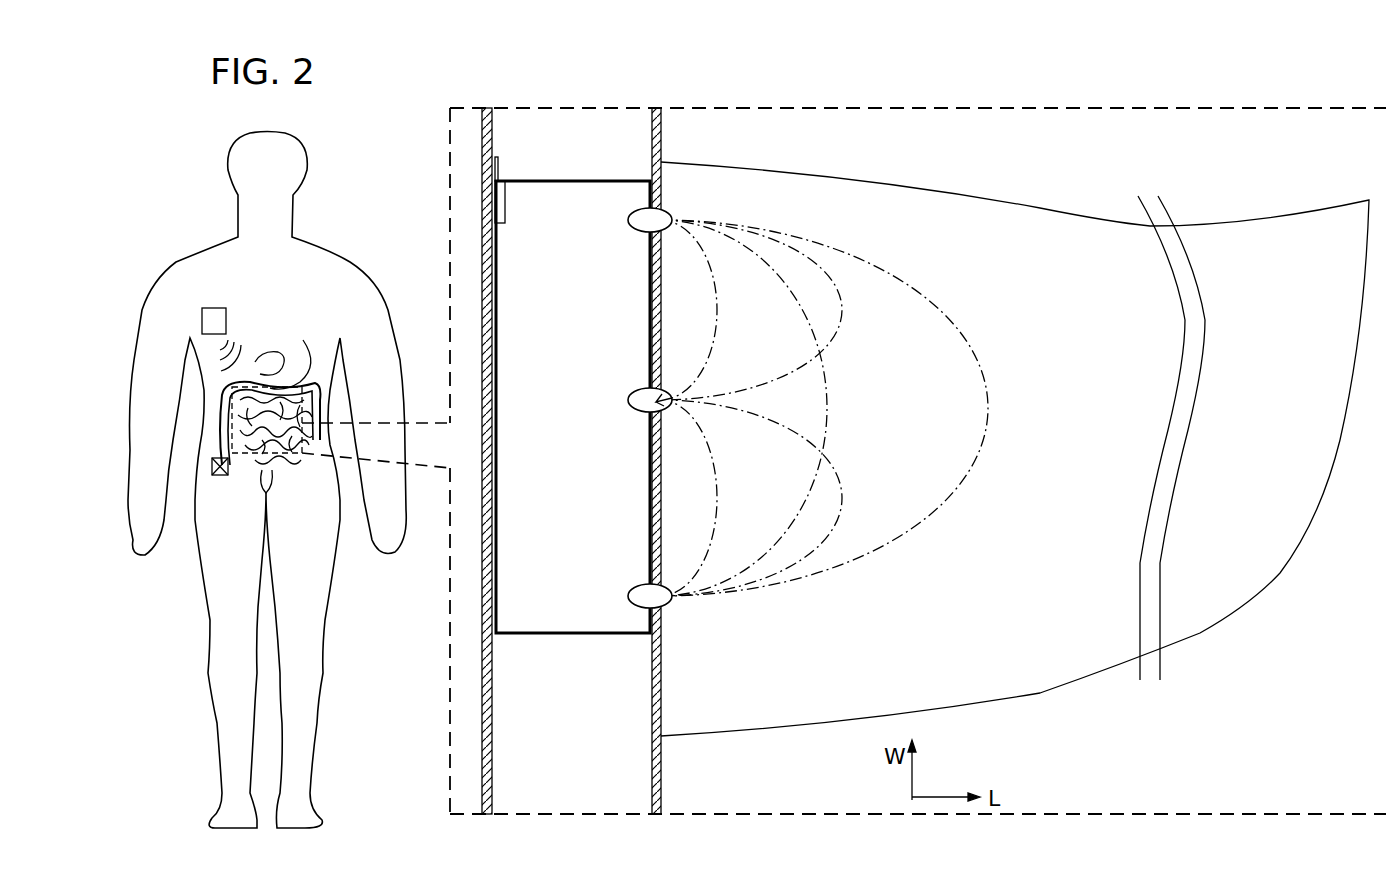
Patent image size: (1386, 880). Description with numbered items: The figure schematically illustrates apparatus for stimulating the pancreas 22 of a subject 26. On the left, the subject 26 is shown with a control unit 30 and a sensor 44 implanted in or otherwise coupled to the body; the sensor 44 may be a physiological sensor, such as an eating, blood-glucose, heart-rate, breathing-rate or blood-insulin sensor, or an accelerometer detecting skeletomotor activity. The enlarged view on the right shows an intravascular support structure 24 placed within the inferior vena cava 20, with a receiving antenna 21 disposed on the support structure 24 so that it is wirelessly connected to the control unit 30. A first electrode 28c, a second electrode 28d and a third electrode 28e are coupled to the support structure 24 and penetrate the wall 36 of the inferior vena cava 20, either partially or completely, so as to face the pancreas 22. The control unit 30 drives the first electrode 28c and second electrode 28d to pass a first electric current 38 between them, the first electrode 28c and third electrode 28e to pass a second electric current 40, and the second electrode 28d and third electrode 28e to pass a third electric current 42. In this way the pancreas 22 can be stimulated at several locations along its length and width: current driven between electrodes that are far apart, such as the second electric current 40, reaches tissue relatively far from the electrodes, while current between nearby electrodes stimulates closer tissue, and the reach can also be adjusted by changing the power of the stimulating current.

The inferior vena cava 20 is at (662, 124).
The receiving antenna 21 is at (497, 200).
The pancreas 22 is at (1205, 628).
The intravascular support structure 24 is at (575, 181).
The subject 26 is at (322, 170).
The first electrode 28c is at (628, 219).
The second electrode 28d is at (628, 399).
The third electrode 28e is at (628, 595).
The control unit 30 is at (226, 318).
The wall of inferior vena cava 36 is at (662, 772).
The first electric current 38 is at (718, 296).
The second electric current 40 is at (830, 380).
The third electric current 42 is at (718, 478).
The sensor 44 is at (221, 477).